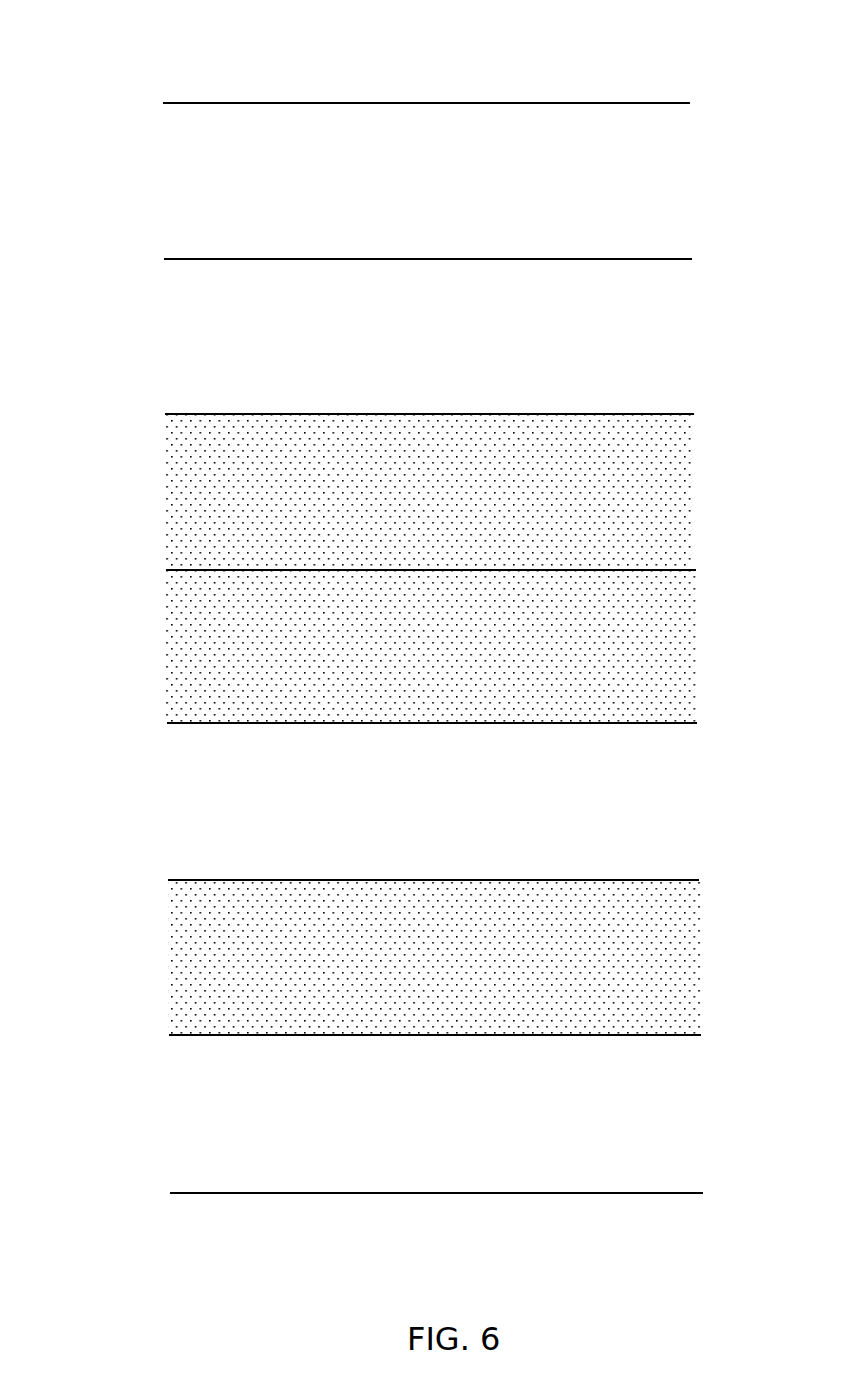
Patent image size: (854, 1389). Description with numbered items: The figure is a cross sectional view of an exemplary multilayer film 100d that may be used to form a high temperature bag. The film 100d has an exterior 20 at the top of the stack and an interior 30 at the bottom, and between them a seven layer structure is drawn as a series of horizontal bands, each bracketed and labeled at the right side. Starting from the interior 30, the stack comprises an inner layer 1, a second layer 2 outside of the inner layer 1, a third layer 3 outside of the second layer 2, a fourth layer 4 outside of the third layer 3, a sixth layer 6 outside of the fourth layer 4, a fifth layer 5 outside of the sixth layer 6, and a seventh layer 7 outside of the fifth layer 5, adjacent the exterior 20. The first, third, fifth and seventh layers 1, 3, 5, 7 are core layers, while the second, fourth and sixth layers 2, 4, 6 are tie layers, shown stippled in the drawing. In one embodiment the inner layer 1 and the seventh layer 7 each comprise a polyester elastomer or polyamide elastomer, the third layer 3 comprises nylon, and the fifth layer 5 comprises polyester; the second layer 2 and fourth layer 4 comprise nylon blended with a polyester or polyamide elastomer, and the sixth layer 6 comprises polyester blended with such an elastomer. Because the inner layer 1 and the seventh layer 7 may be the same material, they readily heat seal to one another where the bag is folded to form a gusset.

The multilayer film 100d is at (143, 100).
The inner layer 1 is at (728, 1036).
The second layer 2 is at (725, 881).
The third layer 3 is at (723, 725).
The fourth layer 4 is at (722, 571).
The fifth layer 5 is at (715, 258).
The sixth layer 6 is at (720, 414).
The seventh layer 7 is at (712, 98).
The exterior 20 is at (440, 101).
The interior 30 is at (510, 1198).